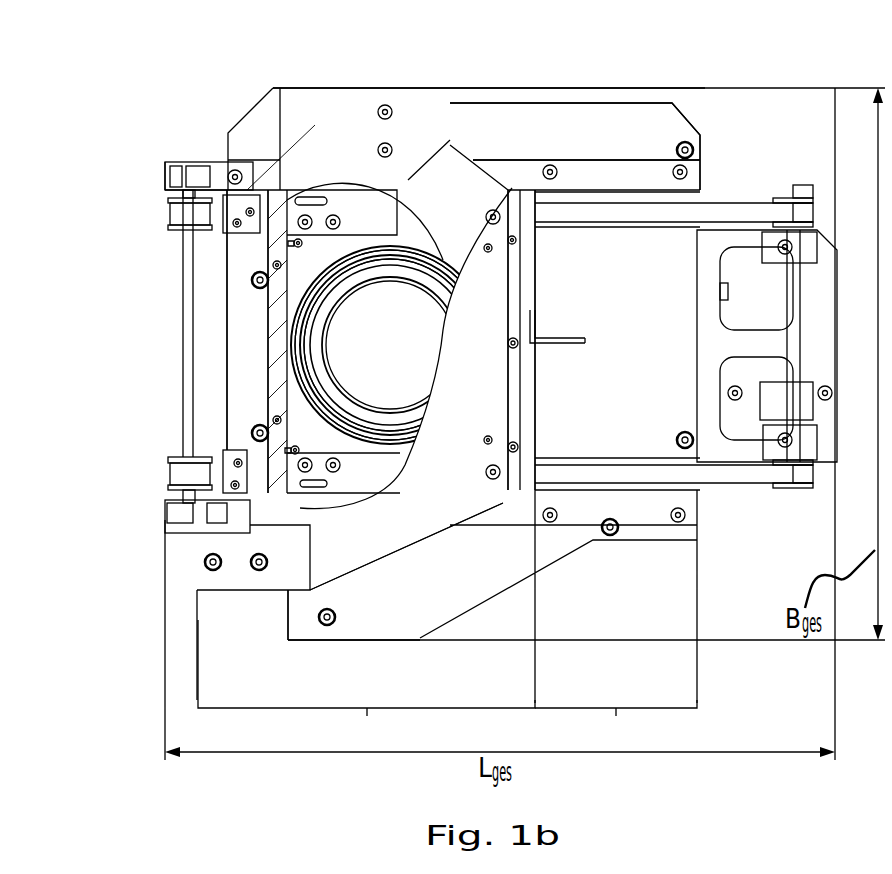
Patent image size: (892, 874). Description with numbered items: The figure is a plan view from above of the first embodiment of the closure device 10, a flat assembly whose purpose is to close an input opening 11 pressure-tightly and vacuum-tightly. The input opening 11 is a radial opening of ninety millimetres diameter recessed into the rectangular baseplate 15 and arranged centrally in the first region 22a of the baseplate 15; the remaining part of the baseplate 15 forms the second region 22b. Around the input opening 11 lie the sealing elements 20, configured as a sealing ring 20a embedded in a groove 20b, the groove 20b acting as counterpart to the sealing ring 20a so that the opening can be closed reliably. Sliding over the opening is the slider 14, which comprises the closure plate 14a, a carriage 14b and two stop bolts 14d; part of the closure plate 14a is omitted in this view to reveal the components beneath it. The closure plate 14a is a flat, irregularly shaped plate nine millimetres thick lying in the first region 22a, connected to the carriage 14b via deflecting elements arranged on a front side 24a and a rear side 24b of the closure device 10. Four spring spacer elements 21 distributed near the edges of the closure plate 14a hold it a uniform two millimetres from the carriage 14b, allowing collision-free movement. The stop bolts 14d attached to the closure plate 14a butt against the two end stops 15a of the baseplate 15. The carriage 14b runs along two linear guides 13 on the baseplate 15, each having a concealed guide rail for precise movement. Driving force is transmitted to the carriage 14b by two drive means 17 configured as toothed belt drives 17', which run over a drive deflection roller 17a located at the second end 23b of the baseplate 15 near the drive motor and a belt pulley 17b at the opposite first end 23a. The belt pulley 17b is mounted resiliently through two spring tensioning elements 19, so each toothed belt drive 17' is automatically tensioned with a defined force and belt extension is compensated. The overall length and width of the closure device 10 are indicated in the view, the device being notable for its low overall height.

The closure device 10 is at (214, 72).
The input opening 11 is at (397, 313).
The linear guides 13 is at (694, 182).
The slider 14 is at (444, 549).
The closure plate 14a is at (460, 492).
The carriage 14b is at (528, 262).
The stop bolts 14d is at (297, 240).
The baseplate 15 is at (668, 130).
The end stops 15a is at (294, 243).
The drive means 17 is at (674, 180).
The toothed belt drives 17' is at (674, 505).
The drive deflection roller 17a is at (797, 200).
The belt pulley 17b is at (178, 490).
The spring tensioning elements 19 is at (208, 172).
The sealing elements 20 is at (403, 238).
The sealing ring 20a is at (412, 252).
The groove 20b is at (428, 252).
The spring spacer elements 21 is at (330, 216).
The first region 22a is at (350, 640).
The second region 22b is at (685, 424).
The first end 23a is at (155, 296).
The second end 23b is at (850, 327).
The front side 24a is at (347, 660).
The rear side 24b is at (567, 86).